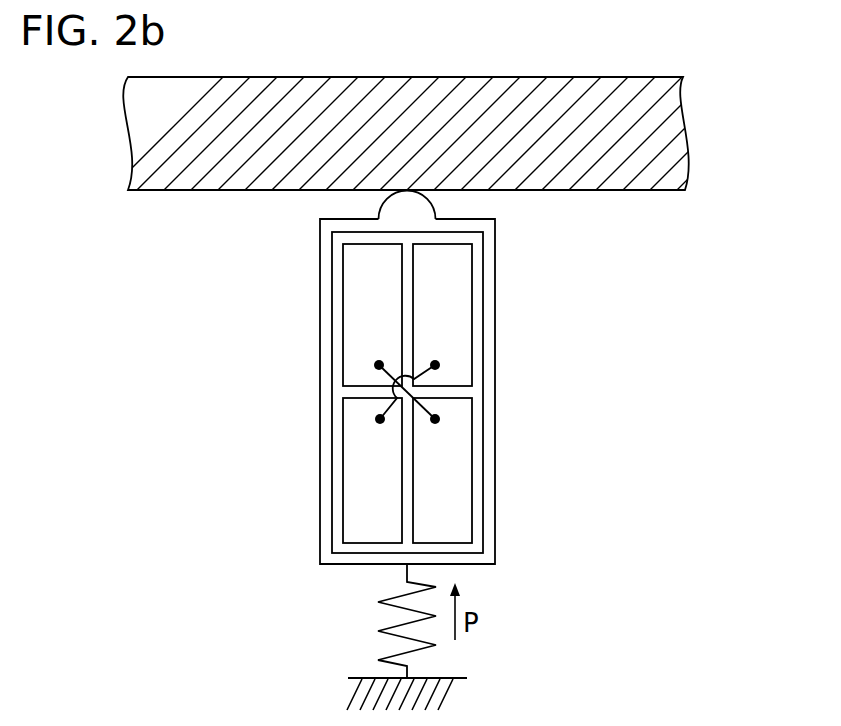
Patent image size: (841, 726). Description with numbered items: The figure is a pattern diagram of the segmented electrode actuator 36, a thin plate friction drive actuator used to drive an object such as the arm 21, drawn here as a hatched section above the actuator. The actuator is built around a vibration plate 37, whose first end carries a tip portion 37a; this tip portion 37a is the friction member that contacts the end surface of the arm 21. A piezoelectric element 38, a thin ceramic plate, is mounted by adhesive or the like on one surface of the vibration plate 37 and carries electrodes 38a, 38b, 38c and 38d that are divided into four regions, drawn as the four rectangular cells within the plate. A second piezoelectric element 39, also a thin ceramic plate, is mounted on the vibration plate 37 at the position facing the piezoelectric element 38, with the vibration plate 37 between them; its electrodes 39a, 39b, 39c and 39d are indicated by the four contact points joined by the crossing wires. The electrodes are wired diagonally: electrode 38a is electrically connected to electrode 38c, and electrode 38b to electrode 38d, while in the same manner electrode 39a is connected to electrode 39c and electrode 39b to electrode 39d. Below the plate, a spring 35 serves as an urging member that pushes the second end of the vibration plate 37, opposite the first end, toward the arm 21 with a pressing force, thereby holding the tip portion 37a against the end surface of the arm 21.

The arm 21 is at (686, 130).
The segmented electrode actuator 36 is at (572, 310).
The vibration plate 37 is at (495, 412).
The tip portion 37a is at (434, 203).
The piezoelectric element 38 is at (483, 358).
The electrode 38a is at (442, 470).
The electrode 38b is at (442, 315).
The electrode 38c is at (372, 315).
The electrode 38d is at (372, 470).
The piezoelectric element 39 is at (118, 332).
The electrode 39a is at (306, 412).
The electrode 39b is at (264, 374).
The electrode 39c is at (265, 374).
The electrode 39d is at (294, 391).
The spring 35 is at (378, 631).